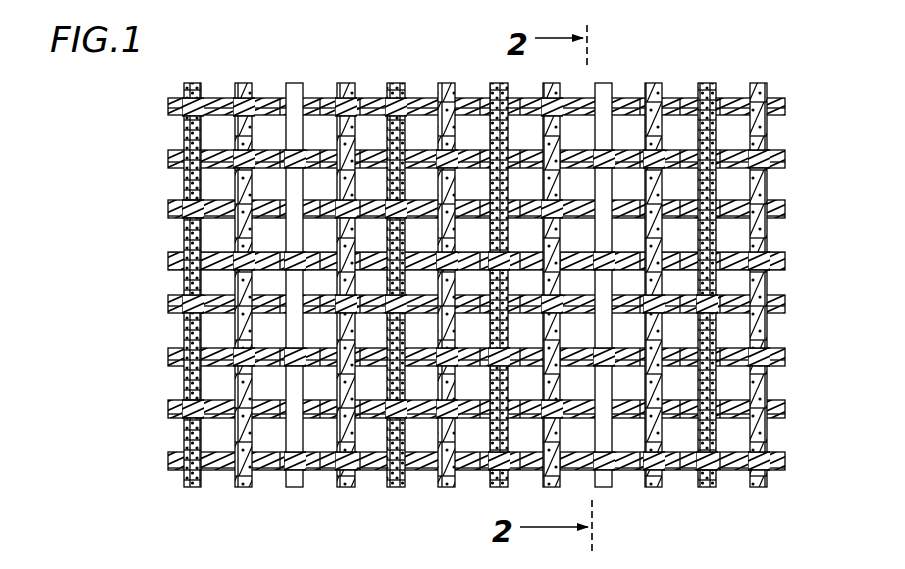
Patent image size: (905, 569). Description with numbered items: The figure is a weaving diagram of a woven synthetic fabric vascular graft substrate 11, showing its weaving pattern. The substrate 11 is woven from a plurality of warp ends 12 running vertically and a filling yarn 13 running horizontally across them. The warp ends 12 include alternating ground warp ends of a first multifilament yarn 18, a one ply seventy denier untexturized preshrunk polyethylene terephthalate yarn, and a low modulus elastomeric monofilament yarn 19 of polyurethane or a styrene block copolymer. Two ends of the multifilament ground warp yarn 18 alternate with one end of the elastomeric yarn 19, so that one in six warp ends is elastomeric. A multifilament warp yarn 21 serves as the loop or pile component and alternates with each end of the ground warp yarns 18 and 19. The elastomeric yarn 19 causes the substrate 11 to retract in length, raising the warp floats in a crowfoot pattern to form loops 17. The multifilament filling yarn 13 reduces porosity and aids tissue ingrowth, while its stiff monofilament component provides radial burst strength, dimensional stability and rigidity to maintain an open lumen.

The woven vascular graft substrate 11 is at (452, 300).
The warp ends 12 is at (610, 327).
The filling yarn 13 is at (166, 207).
The loops 17 is at (228, 237).
The first multifilament yarn 18 is at (192, 83).
The low modulus elastomeric monofilament yarn 19 is at (295, 488).
The multifilament warp yarn 21 is at (443, 299).